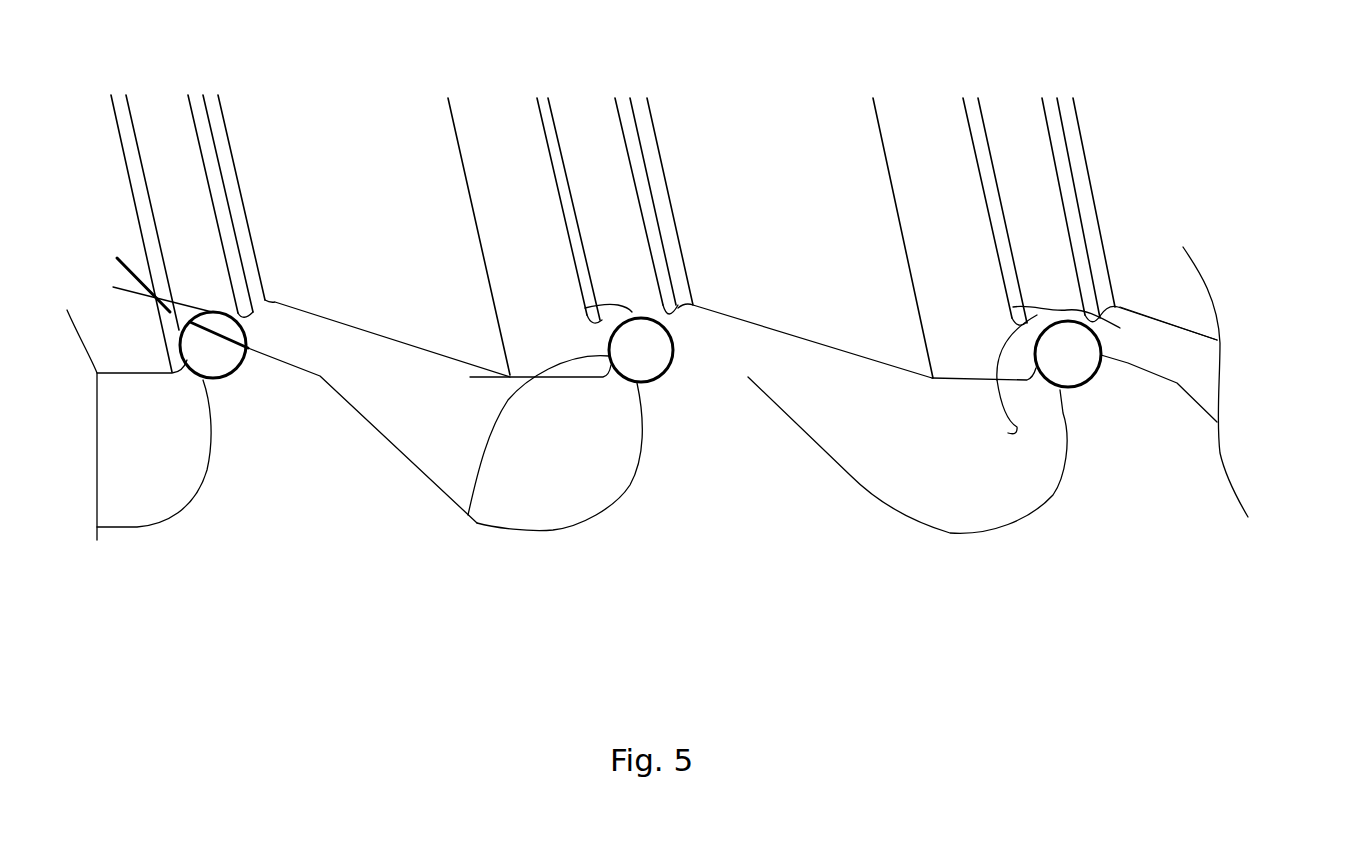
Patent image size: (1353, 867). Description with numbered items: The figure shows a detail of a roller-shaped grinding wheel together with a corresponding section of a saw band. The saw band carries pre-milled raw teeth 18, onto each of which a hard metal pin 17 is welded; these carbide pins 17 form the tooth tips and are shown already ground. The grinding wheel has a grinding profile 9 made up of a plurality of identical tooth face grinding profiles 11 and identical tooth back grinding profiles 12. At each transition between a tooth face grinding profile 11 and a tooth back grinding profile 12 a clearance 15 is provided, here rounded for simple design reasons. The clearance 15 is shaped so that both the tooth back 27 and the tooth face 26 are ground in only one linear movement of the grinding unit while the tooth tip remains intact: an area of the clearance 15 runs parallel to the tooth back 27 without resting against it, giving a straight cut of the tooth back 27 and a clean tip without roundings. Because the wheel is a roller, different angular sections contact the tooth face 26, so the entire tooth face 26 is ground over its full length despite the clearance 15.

The grinding profile 9 is at (559, 381).
The tooth face grinding profile 11 is at (468, 515).
The tooth back grinding profile 12 is at (632, 312).
The clearance 15 is at (587, 310).
The hard metal pin 17 is at (645, 372).
The raw tooth 18 is at (320, 469).
The tooth face 26 is at (1060, 403).
The tooth back 27 is at (1128, 363).